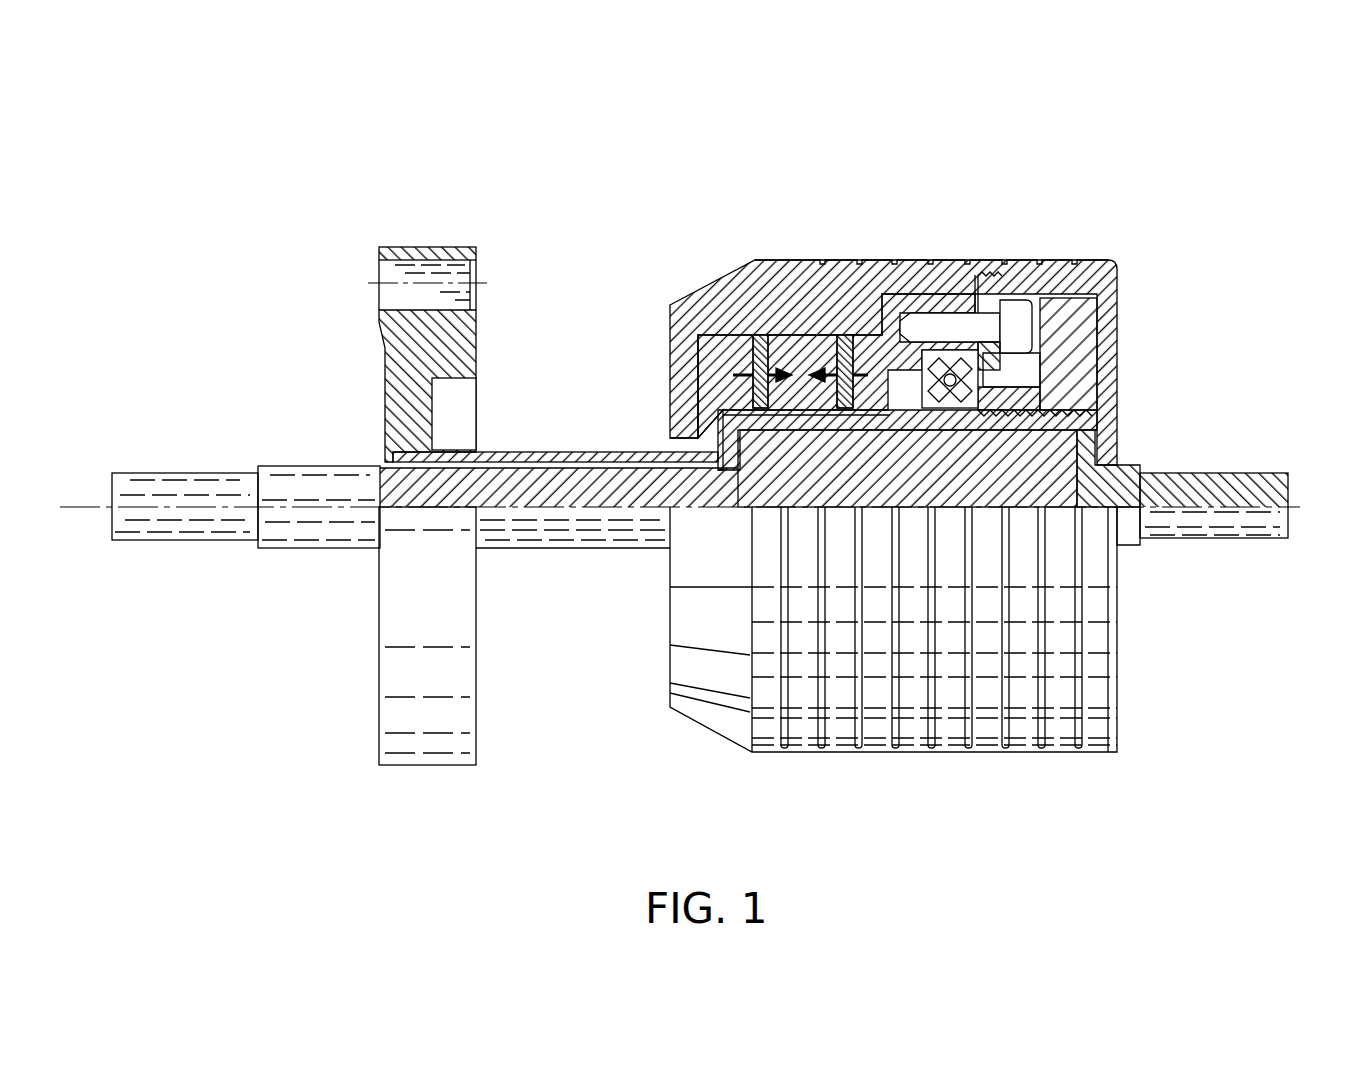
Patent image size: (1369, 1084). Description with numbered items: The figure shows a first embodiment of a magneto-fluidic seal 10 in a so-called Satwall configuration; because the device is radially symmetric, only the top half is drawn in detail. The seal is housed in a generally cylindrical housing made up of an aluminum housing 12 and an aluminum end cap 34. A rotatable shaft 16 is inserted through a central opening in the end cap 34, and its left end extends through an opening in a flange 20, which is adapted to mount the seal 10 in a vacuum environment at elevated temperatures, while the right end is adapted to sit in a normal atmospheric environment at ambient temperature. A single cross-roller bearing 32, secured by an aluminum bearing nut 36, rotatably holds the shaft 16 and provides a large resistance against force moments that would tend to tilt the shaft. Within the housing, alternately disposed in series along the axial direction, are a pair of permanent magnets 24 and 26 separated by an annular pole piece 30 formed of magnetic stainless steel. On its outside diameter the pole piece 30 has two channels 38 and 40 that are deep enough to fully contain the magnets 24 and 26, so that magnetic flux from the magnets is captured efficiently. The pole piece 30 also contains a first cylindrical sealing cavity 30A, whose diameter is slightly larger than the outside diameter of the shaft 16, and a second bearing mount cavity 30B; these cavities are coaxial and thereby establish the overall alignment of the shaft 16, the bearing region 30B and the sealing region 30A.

The magneto-fluidic seal 10 is at (1176, 232).
The aluminum housing 12 is at (840, 260).
The rotatable shaft 16 is at (1233, 538).
The flange 20 is at (420, 245).
The permanent magnet 24 is at (757, 337).
The permanent magnet 26 is at (846, 335).
The annular pole piece 30 is at (727, 347).
The first cylindrical cavity (sealing cavity) 30A is at (713, 430).
The second cavity (bearing mount cavity) 30B is at (1022, 373).
The cross-roller bearing 32 is at (977, 275).
The aluminum end cap 34 is at (1052, 262).
The aluminum bearing nut 36 is at (1067, 342).
The channel 38 is at (698, 345).
The channel 40 is at (940, 360).